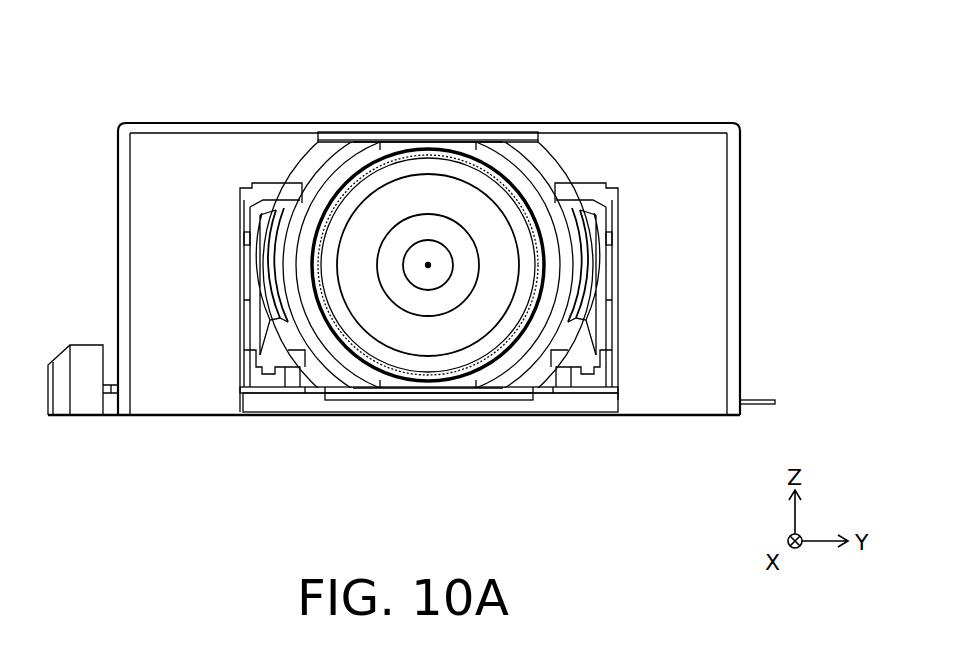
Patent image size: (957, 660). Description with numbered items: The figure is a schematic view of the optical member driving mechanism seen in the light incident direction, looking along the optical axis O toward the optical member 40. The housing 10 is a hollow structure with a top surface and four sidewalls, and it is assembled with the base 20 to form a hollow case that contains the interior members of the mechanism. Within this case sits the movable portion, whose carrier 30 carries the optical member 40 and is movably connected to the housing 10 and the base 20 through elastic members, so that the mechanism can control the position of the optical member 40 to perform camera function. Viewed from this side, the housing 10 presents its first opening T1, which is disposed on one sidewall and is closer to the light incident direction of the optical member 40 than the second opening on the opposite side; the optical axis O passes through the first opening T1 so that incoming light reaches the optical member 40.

The housing 10 is at (702, 232).
The base 20 is at (561, 402).
The carrier 30 is at (262, 182).
The optical member 40 is at (402, 327).
The optical axis O is at (428, 263).
The first opening T1 is at (528, 148).